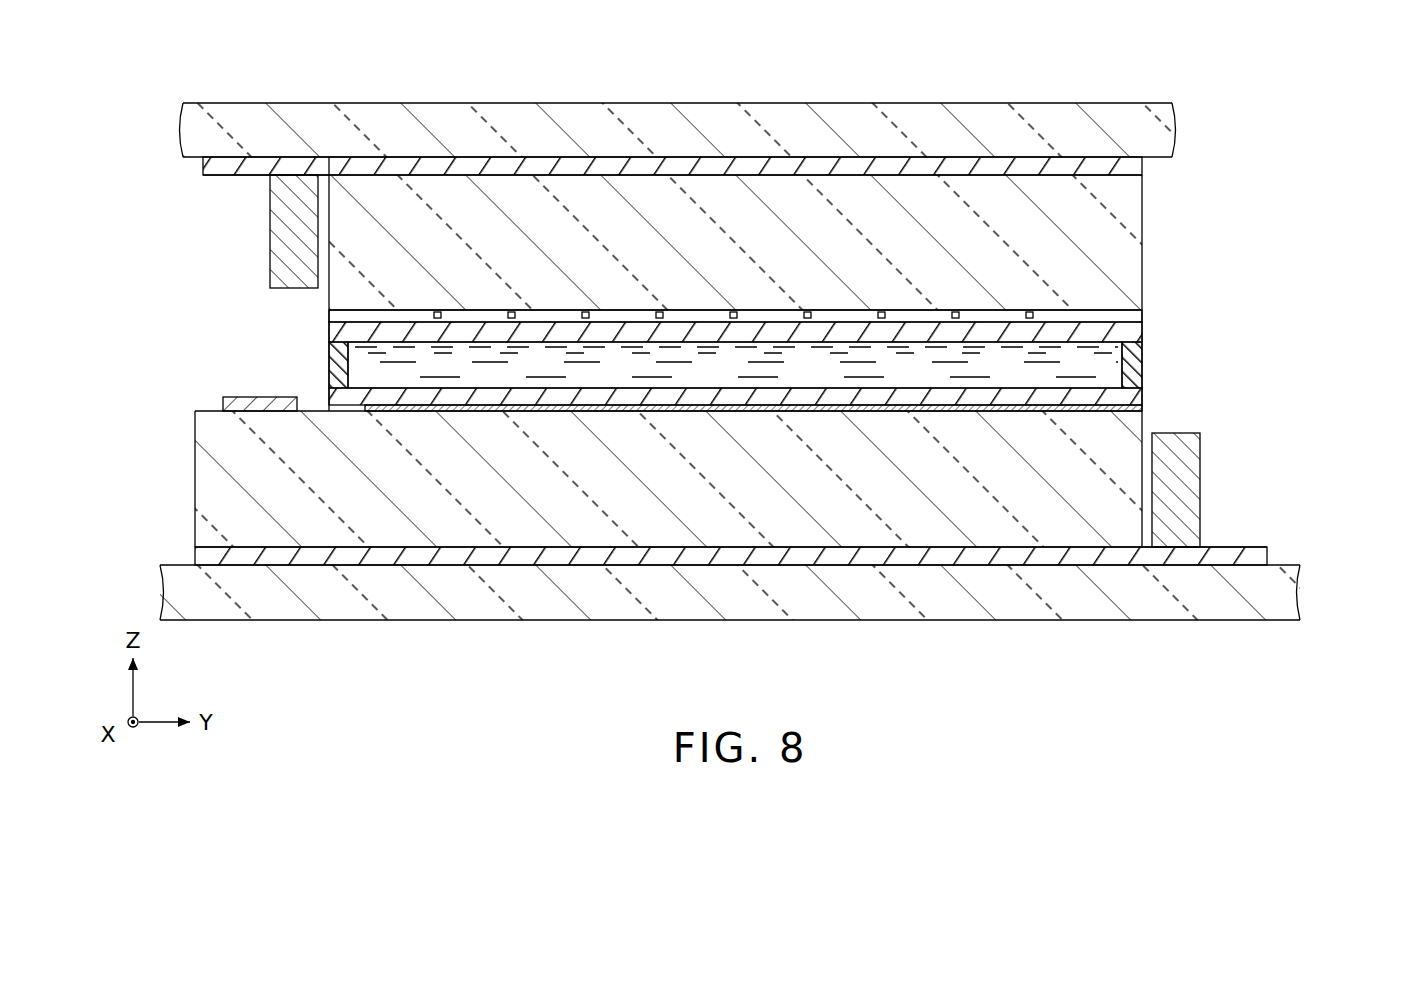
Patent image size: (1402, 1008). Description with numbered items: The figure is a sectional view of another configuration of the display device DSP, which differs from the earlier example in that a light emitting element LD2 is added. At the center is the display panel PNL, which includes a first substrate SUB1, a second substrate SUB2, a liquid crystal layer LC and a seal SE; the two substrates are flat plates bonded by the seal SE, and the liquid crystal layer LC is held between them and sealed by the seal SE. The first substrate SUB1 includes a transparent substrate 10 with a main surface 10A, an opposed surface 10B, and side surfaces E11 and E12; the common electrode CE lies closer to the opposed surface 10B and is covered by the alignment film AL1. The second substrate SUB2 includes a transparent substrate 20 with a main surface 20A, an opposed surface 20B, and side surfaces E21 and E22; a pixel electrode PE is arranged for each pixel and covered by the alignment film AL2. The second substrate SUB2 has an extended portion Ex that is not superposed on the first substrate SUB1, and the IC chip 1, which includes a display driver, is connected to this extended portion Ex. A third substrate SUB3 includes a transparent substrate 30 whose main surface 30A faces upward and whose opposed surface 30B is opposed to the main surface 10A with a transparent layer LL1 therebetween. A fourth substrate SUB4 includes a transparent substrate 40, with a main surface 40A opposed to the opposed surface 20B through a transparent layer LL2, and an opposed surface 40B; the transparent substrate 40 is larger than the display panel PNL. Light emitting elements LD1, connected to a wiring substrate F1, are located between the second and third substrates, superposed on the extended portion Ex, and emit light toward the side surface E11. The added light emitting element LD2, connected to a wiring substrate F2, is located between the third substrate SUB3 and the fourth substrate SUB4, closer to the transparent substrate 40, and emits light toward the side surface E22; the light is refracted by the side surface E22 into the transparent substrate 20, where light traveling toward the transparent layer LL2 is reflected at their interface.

The display device DSP is at (743, 359).
The display panel PNL is at (671, 358).
The transparent substrate 10 is at (740, 233).
The first substrate SUB1 is at (1152, 250).
The main surface 10A is at (868, 168).
The opposed surface 10B is at (910, 322).
The side surface E11 is at (326, 297).
The side surface E12 is at (1147, 277).
The transparent substrate 20 is at (670, 498).
The second substrate SUB2 is at (190, 521).
The main surface 20A is at (757, 406).
The opposed surface 20B is at (792, 550).
The side surface E21 is at (191, 460).
The side surface E22 is at (1147, 423).
The extended portion Ex is at (207, 407).
The transparent substrate 30 is at (709, 108).
The third substrate SUB3 is at (1185, 127).
The main surface 30A is at (548, 100).
The opposed surface 30B is at (659, 165).
The transparent substrate 40 is at (763, 618).
The fourth substrate SUB4 is at (1305, 575).
The main surface 40A is at (481, 560).
The opposed surface 40B is at (555, 625).
The transparent layer LL1 is at (1120, 162).
The transparent layer LL2 is at (200, 557).
The light emitting element LD1 is at (276, 241).
The light emitting element LD2 is at (1190, 490).
The wiring substrate F1 is at (232, 176).
The wiring substrate F2 is at (1263, 560).
The common electrode CE is at (1130, 318).
The pixel electrode PE is at (402, 411).
The alignment film AL1 is at (1135, 333).
The alignment film AL2 is at (1130, 401).
The liquid crystal layer LC is at (358, 372).
The seal SE is at (1132, 368).
The IC chip 1 is at (256, 403).